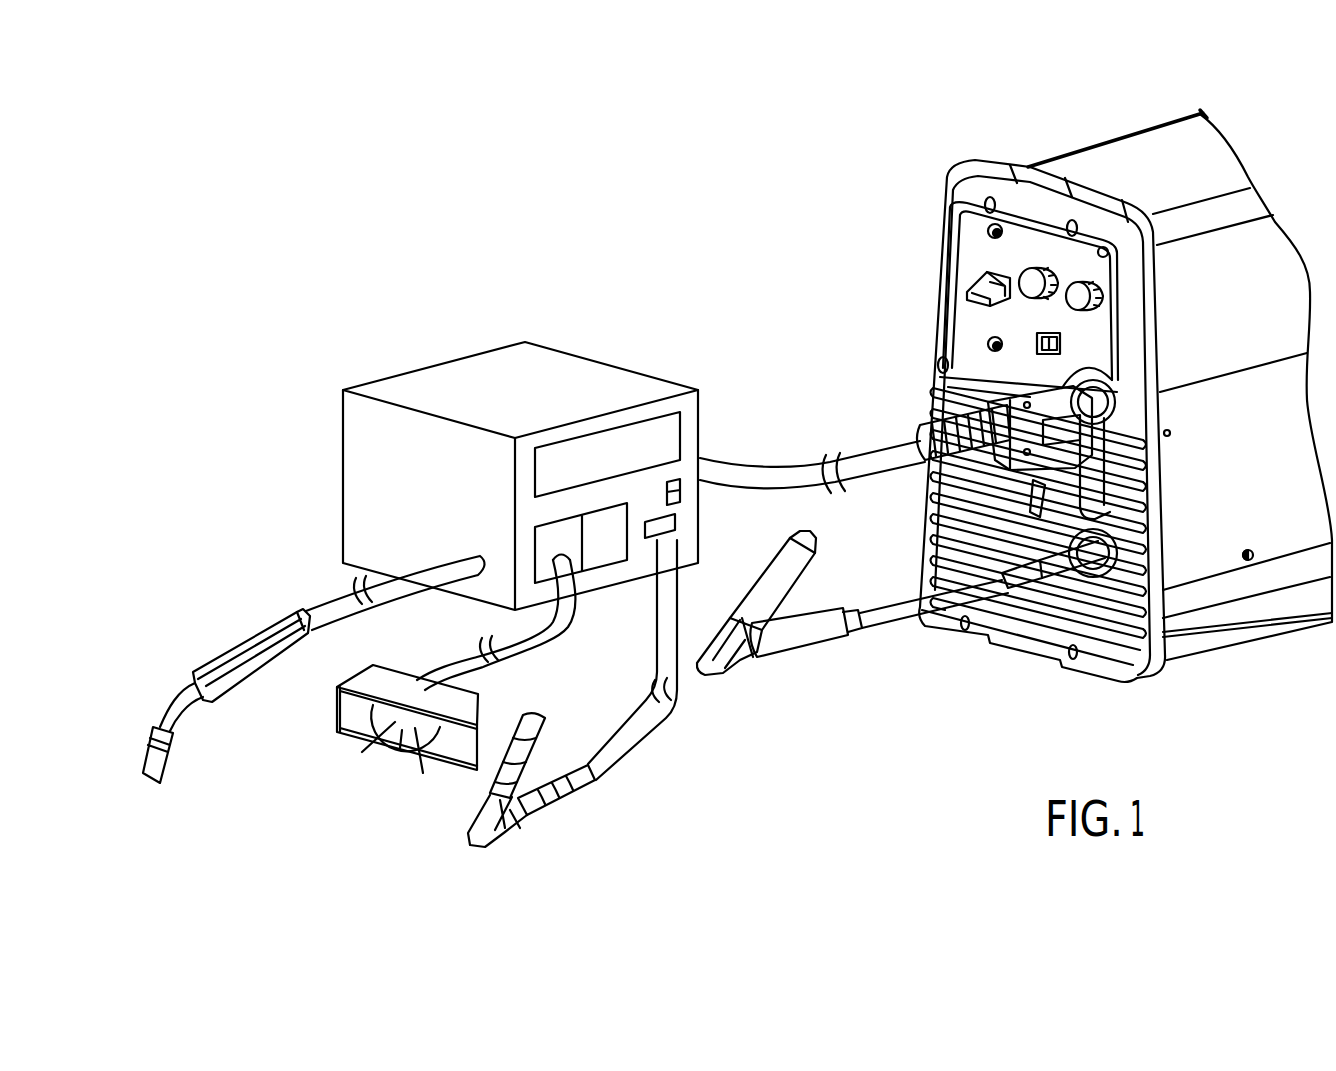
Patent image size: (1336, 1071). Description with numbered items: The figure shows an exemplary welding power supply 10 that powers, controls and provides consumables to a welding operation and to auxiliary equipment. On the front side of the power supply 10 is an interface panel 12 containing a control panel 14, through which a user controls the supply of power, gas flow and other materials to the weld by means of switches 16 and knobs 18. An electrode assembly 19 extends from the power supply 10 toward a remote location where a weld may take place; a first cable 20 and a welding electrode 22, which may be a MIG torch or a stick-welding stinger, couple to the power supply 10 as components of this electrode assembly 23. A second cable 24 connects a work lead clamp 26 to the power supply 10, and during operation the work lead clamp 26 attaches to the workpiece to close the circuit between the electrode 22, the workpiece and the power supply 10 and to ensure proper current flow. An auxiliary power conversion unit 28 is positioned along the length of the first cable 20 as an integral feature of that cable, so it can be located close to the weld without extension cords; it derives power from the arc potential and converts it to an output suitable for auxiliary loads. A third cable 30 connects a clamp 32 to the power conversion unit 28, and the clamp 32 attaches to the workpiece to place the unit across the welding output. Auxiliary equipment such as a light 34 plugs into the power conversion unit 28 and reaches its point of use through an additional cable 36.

The welding power supply 10 is at (1056, 147).
The interface panel 12 is at (950, 188).
The control panel 14 is at (983, 257).
The switches 16 is at (1042, 346).
The knobs 18 is at (1030, 292).
The electrode assembly 19 is at (308, 404).
The first cable 20 is at (860, 460).
The welding electrode 22 is at (248, 640).
The electrode assembly 23 is at (742, 441).
The second cable 24 is at (905, 600).
The work lead clamp 26 is at (760, 583).
The auxiliary power conversion unit 28 is at (613, 362).
The third cable 30 is at (665, 715).
The clamp 32 is at (567, 797).
The light 34 is at (393, 672).
The additional cable 36 is at (487, 662).